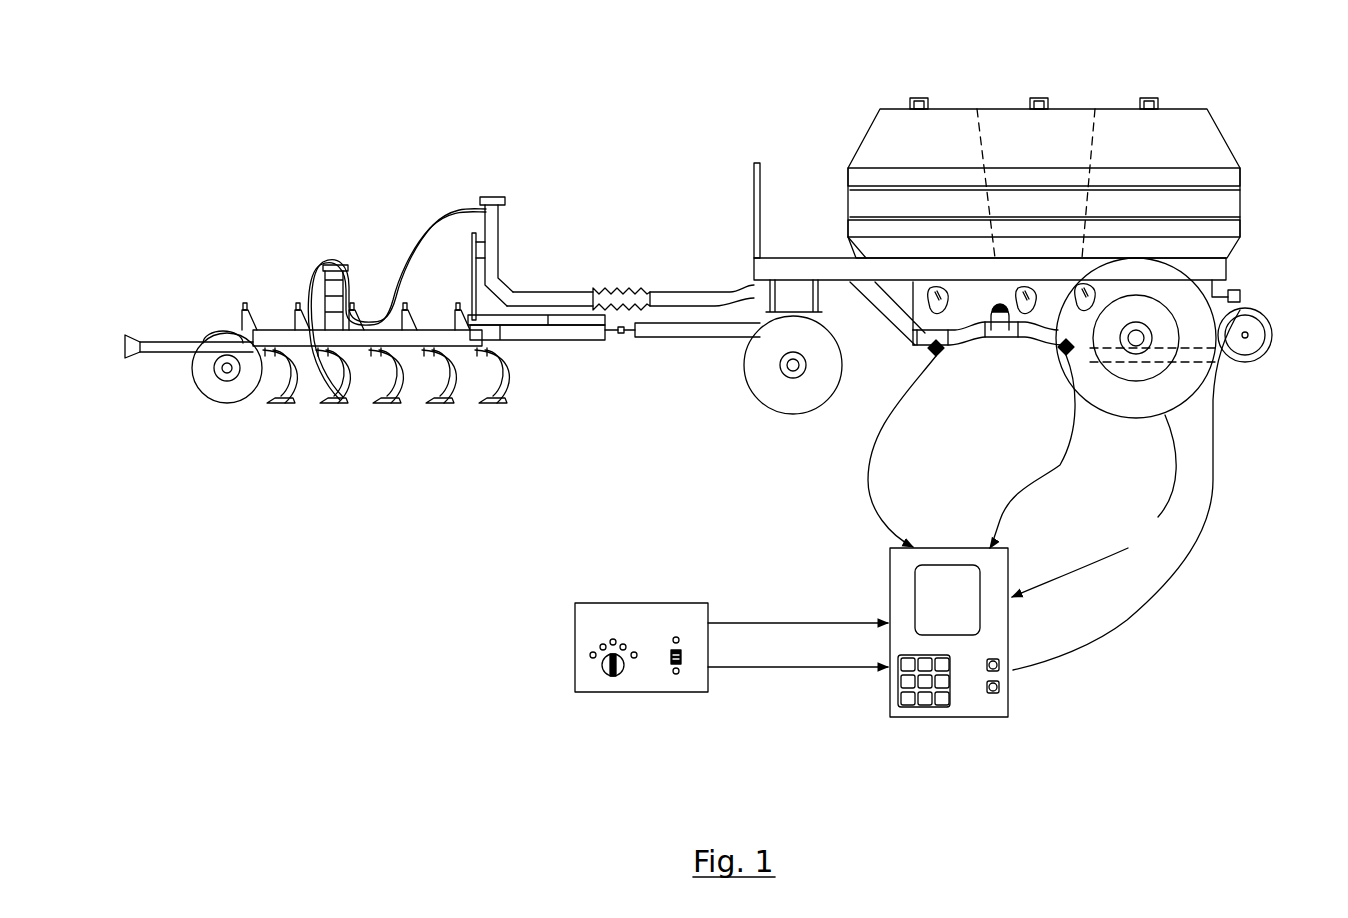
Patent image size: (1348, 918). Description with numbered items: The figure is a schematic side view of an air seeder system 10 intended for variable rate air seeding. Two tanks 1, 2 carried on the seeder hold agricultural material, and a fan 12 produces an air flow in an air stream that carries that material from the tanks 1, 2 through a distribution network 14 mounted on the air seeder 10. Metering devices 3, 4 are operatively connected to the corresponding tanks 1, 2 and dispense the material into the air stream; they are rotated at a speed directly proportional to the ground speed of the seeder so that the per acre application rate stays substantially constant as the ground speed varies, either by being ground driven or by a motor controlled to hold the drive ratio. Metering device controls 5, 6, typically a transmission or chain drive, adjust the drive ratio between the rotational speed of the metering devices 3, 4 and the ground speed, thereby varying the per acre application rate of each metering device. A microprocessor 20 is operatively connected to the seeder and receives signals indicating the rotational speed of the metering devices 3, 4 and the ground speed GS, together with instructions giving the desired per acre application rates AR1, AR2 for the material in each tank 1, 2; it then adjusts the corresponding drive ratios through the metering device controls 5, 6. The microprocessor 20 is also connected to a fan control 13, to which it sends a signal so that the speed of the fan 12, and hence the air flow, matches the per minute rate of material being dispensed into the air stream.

The air seeder system 10 is at (555, 128).
The tank 1 is at (872, 148).
The tank 2 is at (1185, 127).
The metering device 3 is at (936, 350).
The metering device 4 is at (1062, 355).
The metering device control 5 is at (940, 308).
The metering device control 6 is at (1030, 340).
The fan 12 is at (1248, 306).
The fan control 13 is at (1240, 310).
The distribution network 14 is at (540, 290).
The microprocessor 20 is at (963, 717).
The ground speed GS is at (1094, 506).
The desired per acre application rate AR1 is at (731, 647).
The desired per acre application rate AR2 is at (798, 669).